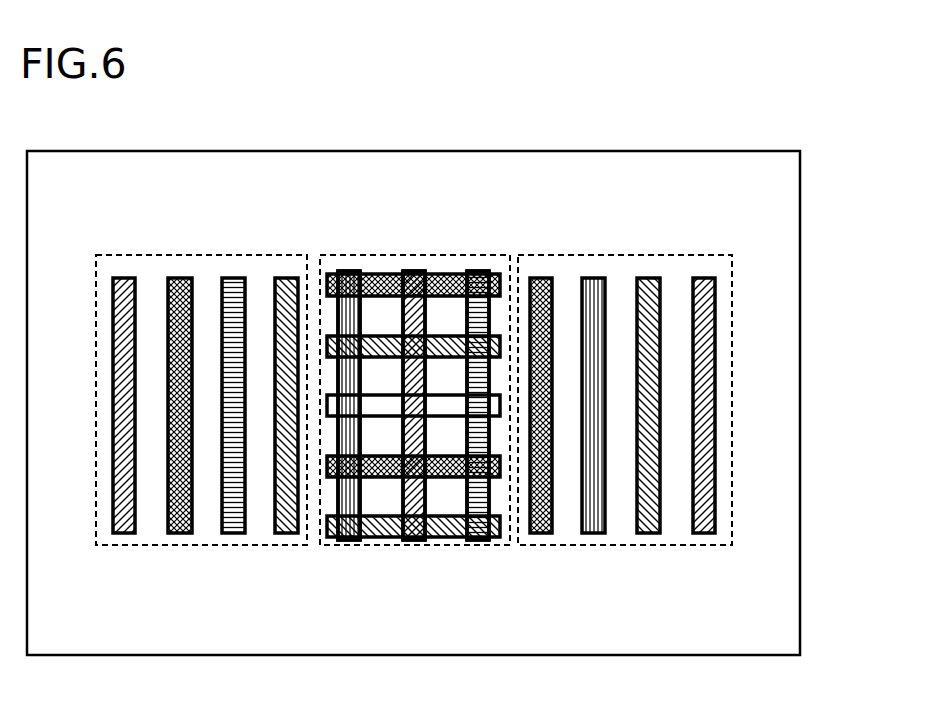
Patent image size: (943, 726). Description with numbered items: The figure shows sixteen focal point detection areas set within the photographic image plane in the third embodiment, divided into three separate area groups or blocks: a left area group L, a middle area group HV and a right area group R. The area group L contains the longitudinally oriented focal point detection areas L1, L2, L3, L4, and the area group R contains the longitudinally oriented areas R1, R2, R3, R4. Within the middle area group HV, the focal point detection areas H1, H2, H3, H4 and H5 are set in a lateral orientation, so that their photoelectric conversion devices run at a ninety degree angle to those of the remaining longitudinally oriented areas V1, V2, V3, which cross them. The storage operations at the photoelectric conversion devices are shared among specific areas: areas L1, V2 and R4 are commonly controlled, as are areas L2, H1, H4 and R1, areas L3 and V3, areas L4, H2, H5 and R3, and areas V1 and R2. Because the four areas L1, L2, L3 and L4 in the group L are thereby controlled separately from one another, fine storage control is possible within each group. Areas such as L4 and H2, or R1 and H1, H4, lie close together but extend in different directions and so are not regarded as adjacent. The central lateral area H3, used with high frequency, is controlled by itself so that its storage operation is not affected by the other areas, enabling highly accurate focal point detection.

The area group L is at (238, 254).
The area group HV is at (414, 254).
The area group R is at (608, 254).
The focal point detection area L1 is at (126, 534).
The focal point detection area L2 is at (182, 534).
The focal point detection area L3 is at (236, 534).
The focal point detection area L4 is at (289, 534).
The focal point detection area V1 is at (352, 541).
The focal point detection area V2 is at (416, 541).
The focal point detection area V3 is at (480, 541).
The focal point detection area H1 is at (500, 278).
The focal point detection area H2 is at (500, 347).
The focal point detection area H3 is at (500, 404).
The focal point detection area H4 is at (500, 466).
The focal point detection area H5 is at (500, 523).
The focal point detection area R1 is at (543, 534).
The focal point detection area R2 is at (596, 534).
The focal point detection area R3 is at (651, 534).
The focal point detection area R4 is at (706, 534).